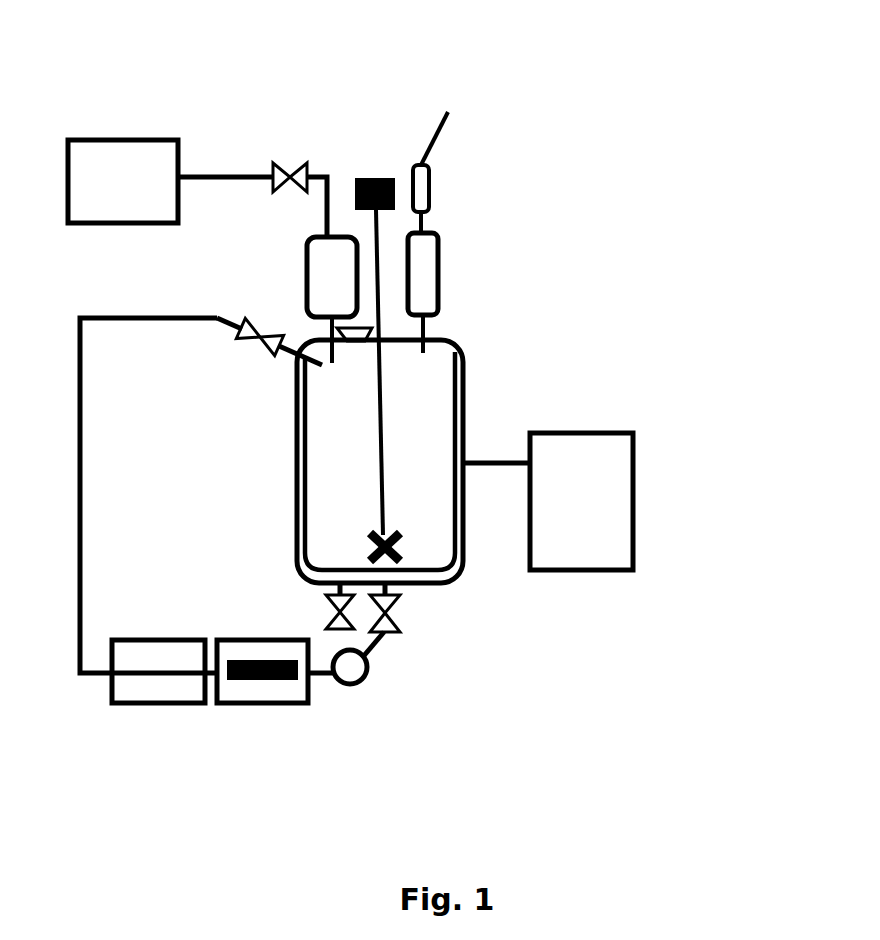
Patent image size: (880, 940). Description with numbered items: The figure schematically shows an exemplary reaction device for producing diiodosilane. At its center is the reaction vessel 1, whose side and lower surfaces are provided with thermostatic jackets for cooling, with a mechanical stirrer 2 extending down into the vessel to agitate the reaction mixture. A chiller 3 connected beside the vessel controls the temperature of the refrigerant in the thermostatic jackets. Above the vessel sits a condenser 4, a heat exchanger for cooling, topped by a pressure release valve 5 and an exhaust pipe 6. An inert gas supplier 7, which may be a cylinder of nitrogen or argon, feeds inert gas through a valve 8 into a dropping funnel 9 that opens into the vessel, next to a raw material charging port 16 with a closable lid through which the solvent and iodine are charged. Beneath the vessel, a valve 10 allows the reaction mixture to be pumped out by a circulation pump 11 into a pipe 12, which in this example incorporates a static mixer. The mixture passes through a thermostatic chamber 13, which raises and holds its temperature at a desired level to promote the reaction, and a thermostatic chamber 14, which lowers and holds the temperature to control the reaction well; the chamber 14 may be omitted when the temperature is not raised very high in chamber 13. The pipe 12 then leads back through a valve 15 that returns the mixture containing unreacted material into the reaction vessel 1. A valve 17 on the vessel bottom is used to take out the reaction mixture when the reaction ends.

The reaction vessel 1 is at (466, 385).
The mechanical stirrer 2 is at (378, 178).
The chiller 3 is at (640, 495).
The condenser 4 is at (442, 272).
The pressure release valve 5 is at (432, 182).
The exhaust pipe 6 is at (446, 124).
The inert gas supplier 7 is at (182, 148).
The valve 8 is at (299, 162).
The dropping funnel 9 is at (306, 268).
The valve 10 is at (405, 608).
The circulation pump 11 is at (370, 675).
The pipe 12 is at (92, 560).
The thermostatic chamber 13 is at (263, 708).
The thermostatic chamber 14 is at (170, 708).
The valve 15 is at (252, 350).
The raw material charging port 16 is at (335, 335).
The valve 17 is at (335, 605).